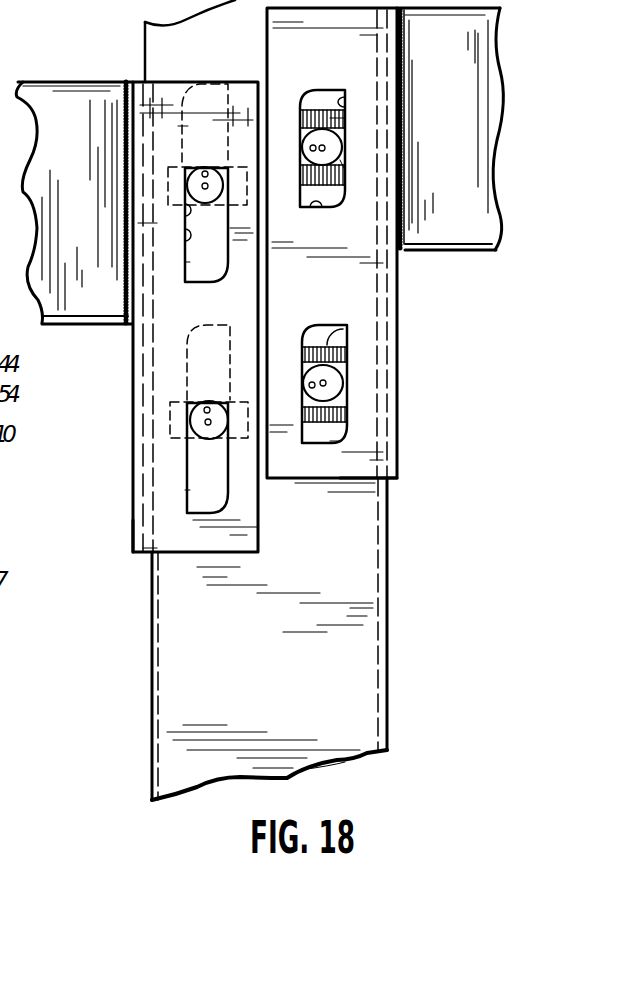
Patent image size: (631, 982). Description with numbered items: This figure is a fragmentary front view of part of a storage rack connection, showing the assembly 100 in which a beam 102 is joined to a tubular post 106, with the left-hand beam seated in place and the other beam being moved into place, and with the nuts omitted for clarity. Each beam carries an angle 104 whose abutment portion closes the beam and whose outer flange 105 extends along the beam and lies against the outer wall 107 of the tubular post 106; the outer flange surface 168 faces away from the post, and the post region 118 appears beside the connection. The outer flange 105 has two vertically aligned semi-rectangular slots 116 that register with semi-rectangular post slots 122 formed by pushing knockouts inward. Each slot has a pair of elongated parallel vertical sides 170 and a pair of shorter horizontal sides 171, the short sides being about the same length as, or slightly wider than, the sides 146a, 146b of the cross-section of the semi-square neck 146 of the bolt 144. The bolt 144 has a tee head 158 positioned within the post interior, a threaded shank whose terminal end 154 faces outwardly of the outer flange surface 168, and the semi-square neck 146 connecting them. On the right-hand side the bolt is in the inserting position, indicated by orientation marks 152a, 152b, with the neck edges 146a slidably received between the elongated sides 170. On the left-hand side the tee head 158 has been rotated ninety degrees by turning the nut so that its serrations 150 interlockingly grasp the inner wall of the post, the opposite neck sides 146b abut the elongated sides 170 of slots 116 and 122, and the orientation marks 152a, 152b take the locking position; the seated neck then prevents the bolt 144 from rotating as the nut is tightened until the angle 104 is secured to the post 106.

The fastening assembly 100 is at (118, 538).
The beam 102 is at (77, 76).
The angle 104 is at (398, 298).
The outer flange 105 is at (358, 482).
The tubular post 106 is at (402, 585).
The outer wall 107 is at (348, 760).
The slots 116 is at (186, 263).
The second panel 118 is at (434, 253).
The post slots 122 is at (183, 131).
The bolt 144 is at (202, 452).
The semi-square neck 146 is at (184, 194).
The sides of the semi-square neck 146a is at (187, 210).
The sides of the semi-square neck 146b is at (299, 117).
The serrations 150 is at (337, 123).
The orientation mark 152a is at (208, 407).
The orientation mark 152b is at (204, 421).
The terminal end 154 is at (345, 167).
The tee head 158 is at (328, 345).
The outer flange surface 168 is at (223, 312).
The elongated parallel vertical sides 170 is at (187, 234).
The shorter horizontal sides 171 is at (350, 64).